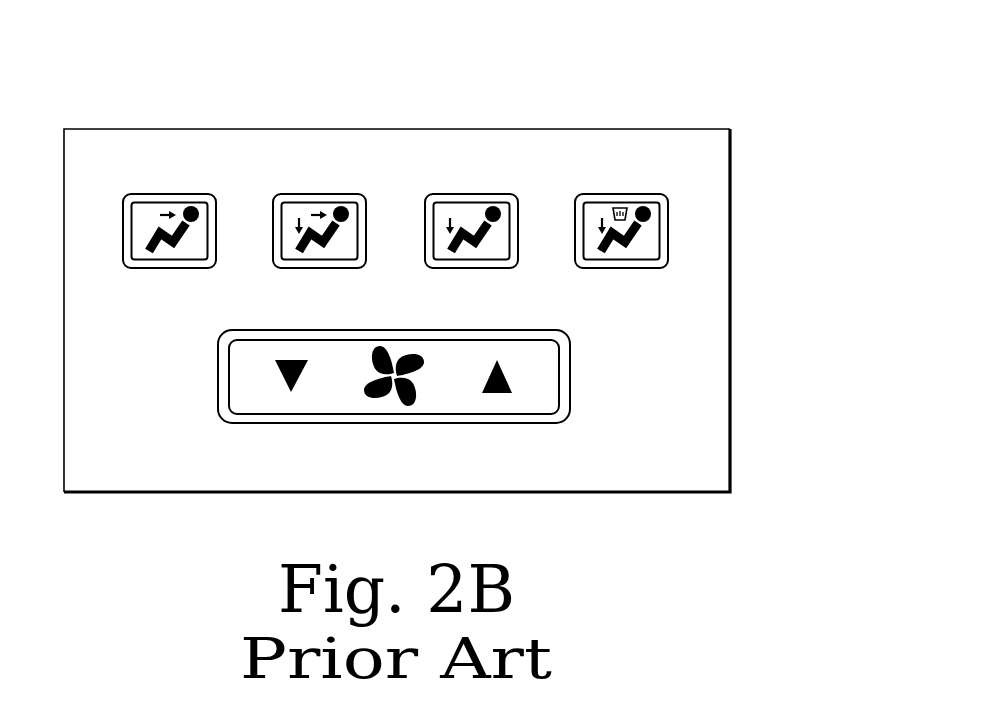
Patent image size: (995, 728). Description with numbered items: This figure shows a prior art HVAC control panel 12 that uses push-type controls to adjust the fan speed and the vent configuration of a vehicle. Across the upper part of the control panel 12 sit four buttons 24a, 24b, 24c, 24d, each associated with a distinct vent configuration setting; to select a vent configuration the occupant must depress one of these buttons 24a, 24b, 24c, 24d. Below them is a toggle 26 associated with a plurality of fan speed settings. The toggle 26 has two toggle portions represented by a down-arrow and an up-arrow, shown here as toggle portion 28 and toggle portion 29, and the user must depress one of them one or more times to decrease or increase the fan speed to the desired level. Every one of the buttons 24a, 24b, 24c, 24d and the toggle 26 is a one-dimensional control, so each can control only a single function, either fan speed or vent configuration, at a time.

The HVAC control panel 12 is at (786, 93).
The push-type control button 24a is at (185, 207).
The push-type control button 24b is at (335, 207).
The push-type control button 24c is at (484, 207).
The push-type control button 24d is at (634, 207).
The toggle 26 is at (452, 398).
The toggle portion 28 is at (279, 375).
The fan speed increase button 29 is at (496, 392).